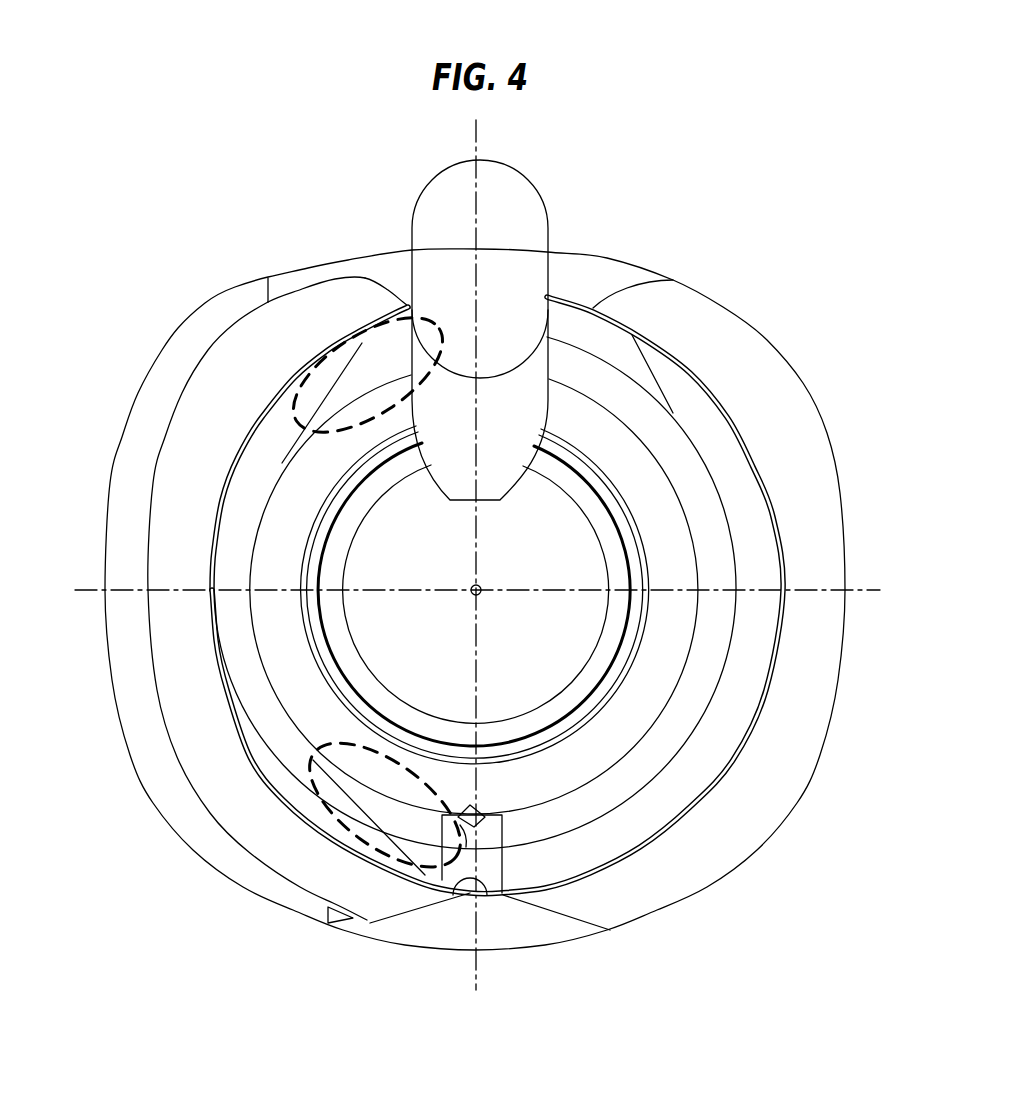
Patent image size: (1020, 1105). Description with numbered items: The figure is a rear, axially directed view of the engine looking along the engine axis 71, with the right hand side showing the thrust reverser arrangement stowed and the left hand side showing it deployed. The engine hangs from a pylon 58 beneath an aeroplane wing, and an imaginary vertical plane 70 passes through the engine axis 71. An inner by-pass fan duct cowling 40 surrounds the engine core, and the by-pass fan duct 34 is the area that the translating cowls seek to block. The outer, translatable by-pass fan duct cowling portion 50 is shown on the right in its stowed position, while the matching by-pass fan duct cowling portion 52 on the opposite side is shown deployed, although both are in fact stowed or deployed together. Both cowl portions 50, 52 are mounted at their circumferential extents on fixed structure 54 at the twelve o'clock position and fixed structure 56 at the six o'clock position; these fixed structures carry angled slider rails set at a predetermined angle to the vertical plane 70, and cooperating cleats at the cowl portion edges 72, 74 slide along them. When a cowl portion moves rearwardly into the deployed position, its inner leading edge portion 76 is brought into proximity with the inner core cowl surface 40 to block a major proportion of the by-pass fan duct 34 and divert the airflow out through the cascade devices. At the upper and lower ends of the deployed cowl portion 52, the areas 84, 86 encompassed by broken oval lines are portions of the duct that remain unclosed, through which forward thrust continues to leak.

The by-pass fan duct 34 is at (680, 457).
The inner by-pass fan duct cowling 40 is at (652, 623).
The translatable by-pass fan duct cowling portion 50 is at (808, 490).
The by-pass fan duct cowling portion 52 is at (178, 500).
The fixed structure 54 is at (367, 262).
The fixed structure 56 is at (488, 863).
The pylon 58 is at (548, 188).
The imaginary vertical plane 70 is at (467, 975).
The engine axis 71 is at (482, 585).
The cowl portion edge 72 is at (380, 280).
The cowl portion edge 74 is at (478, 895).
The inner leading edge portion 76 is at (247, 680).
The area 84 is at (378, 367).
The area 86 is at (410, 823).